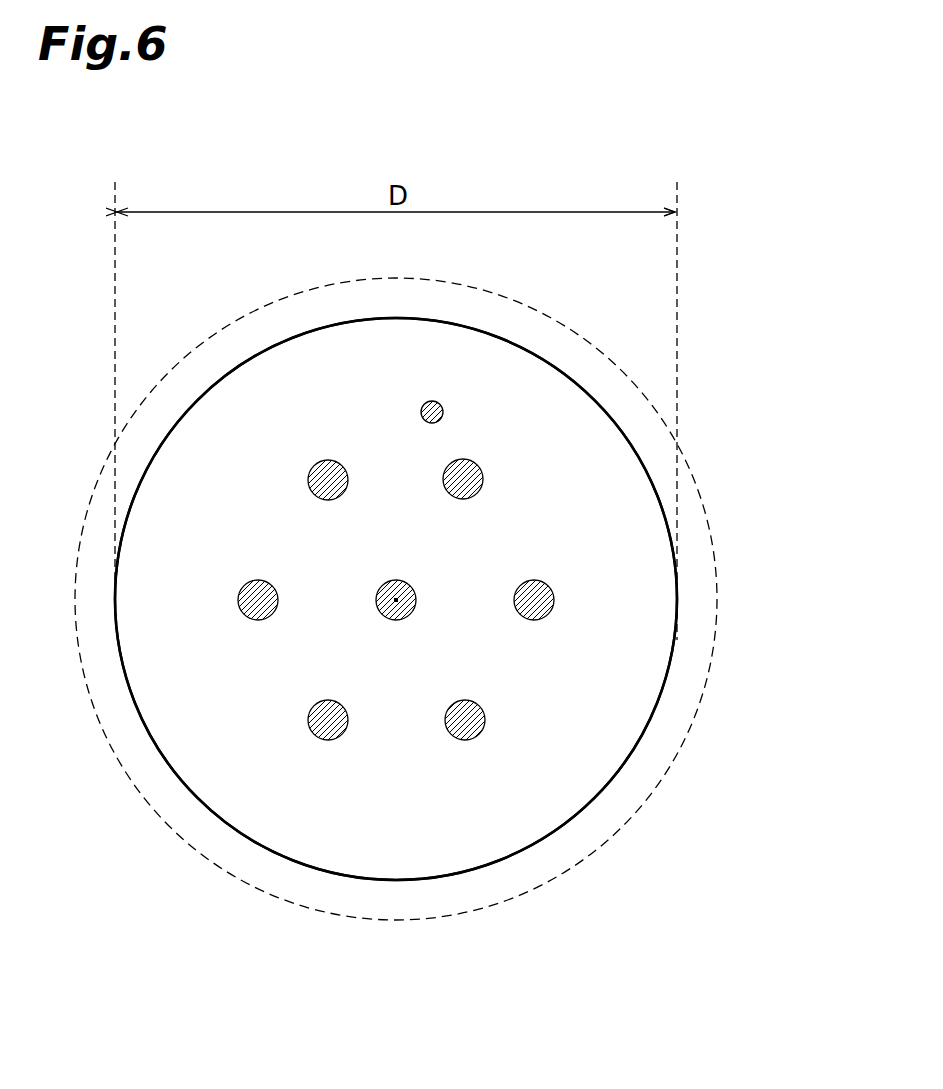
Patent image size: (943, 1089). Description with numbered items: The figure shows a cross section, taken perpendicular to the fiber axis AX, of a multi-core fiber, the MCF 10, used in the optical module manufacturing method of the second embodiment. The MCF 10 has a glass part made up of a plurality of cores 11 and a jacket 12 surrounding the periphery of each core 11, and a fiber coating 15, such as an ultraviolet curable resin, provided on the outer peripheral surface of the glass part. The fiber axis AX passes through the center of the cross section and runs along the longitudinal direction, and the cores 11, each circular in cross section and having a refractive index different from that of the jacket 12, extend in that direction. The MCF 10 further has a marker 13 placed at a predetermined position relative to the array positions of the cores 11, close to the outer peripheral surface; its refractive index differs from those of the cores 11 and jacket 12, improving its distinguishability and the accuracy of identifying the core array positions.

The MCF (multi-core fiber) 10 is at (730, 350).
The cores 11 is at (306, 478).
The jacket 12 is at (570, 403).
The marker 13 is at (440, 400).
The fiber coating 15 is at (702, 510).
The fiber axis AX is at (400, 602).